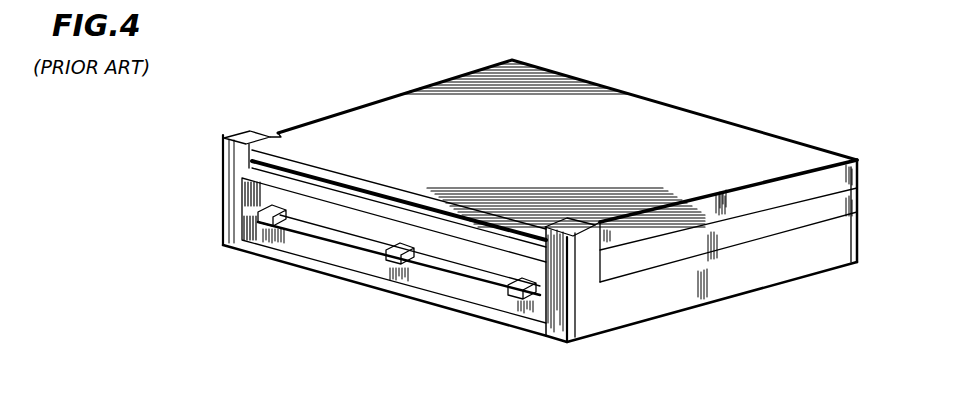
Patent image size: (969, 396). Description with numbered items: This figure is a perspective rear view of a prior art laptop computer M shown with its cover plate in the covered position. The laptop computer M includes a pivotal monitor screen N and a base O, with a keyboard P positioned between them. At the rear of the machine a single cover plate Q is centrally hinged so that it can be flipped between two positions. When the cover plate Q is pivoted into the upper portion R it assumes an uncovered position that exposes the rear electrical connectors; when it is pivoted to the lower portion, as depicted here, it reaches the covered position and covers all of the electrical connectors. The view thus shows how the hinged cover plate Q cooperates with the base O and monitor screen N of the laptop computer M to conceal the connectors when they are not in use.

The laptop computer M is at (535, 183).
The pivotal monitor screen N is at (644, 113).
The base O is at (773, 268).
The keyboard P is at (848, 190).
The cover plate Q is at (355, 262).
The upper portion R is at (264, 196).